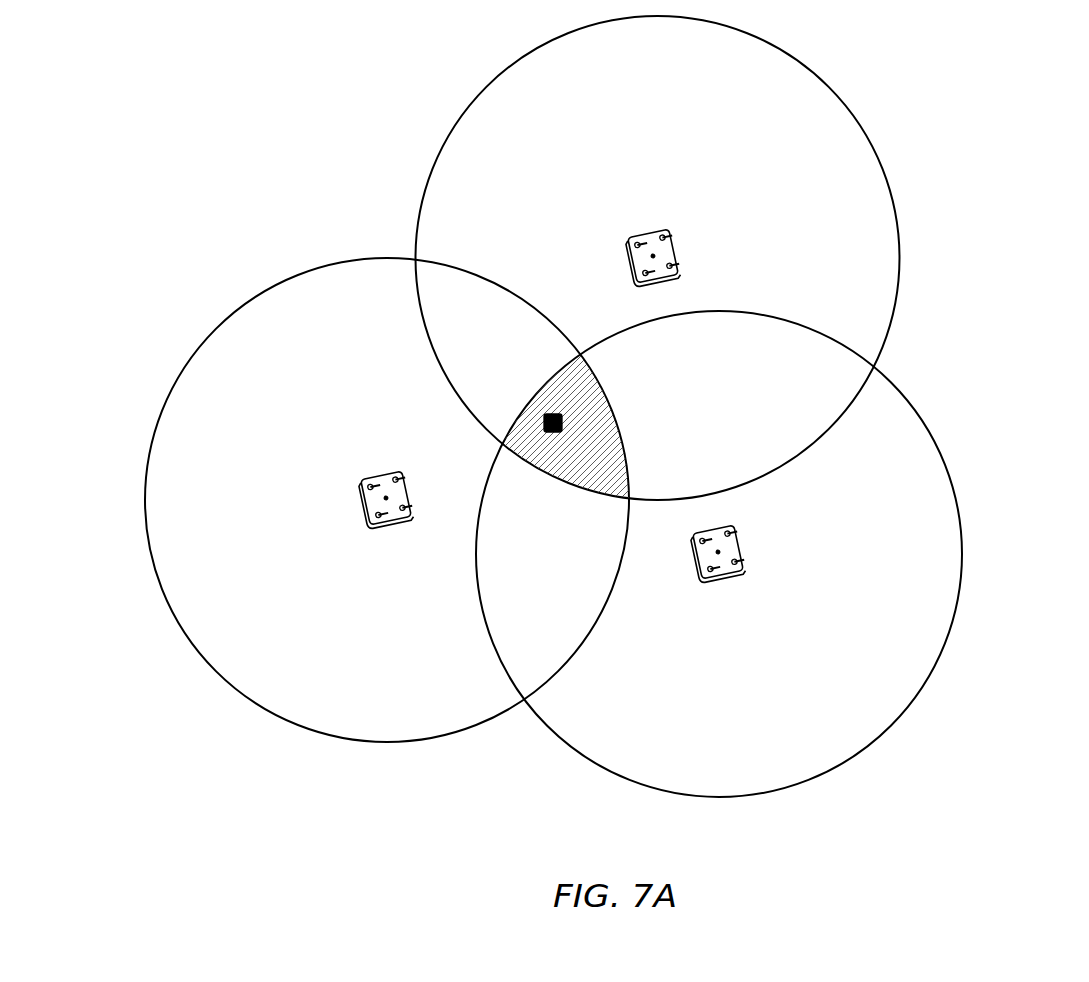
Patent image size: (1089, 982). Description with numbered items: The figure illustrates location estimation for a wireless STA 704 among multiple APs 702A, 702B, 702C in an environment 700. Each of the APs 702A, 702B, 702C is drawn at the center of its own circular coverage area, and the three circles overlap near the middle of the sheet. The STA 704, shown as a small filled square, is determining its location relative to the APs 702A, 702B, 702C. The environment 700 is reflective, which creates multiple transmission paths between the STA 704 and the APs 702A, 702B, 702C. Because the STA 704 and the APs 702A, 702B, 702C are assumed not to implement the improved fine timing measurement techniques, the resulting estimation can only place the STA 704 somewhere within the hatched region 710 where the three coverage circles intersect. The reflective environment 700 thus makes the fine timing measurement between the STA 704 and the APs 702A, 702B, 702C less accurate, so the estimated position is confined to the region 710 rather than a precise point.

The environment 700 is at (963, 120).
The AP 702A is at (658, 258).
The AP 702B is at (719, 554).
The AP 702C is at (387, 500).
The wireless STA 704 is at (560, 406).
The region 710 is at (609, 469).